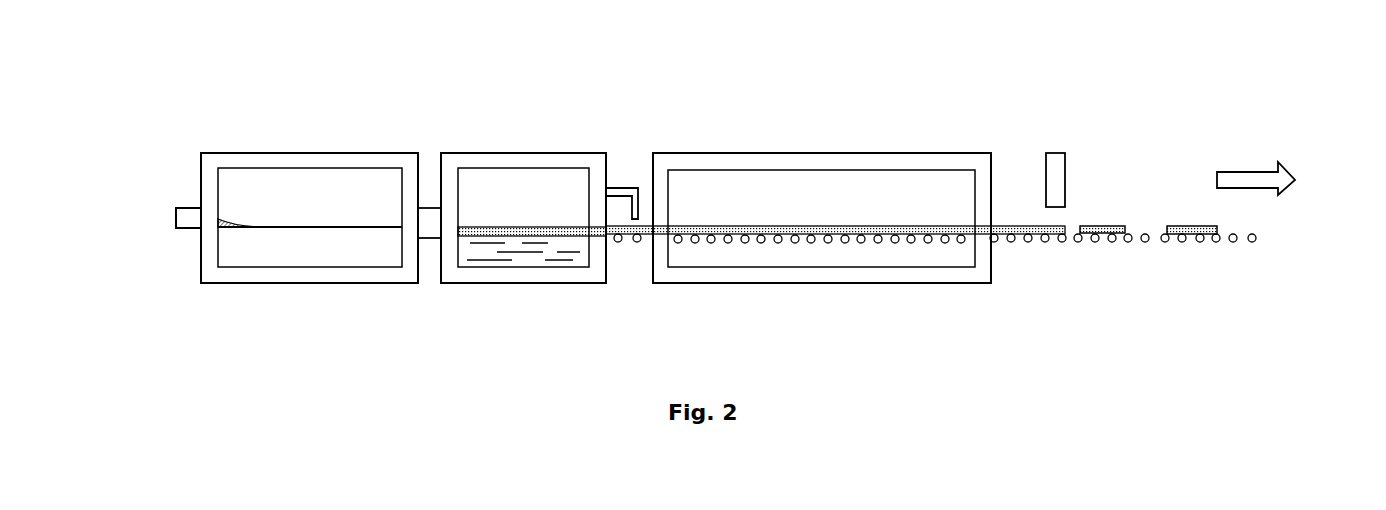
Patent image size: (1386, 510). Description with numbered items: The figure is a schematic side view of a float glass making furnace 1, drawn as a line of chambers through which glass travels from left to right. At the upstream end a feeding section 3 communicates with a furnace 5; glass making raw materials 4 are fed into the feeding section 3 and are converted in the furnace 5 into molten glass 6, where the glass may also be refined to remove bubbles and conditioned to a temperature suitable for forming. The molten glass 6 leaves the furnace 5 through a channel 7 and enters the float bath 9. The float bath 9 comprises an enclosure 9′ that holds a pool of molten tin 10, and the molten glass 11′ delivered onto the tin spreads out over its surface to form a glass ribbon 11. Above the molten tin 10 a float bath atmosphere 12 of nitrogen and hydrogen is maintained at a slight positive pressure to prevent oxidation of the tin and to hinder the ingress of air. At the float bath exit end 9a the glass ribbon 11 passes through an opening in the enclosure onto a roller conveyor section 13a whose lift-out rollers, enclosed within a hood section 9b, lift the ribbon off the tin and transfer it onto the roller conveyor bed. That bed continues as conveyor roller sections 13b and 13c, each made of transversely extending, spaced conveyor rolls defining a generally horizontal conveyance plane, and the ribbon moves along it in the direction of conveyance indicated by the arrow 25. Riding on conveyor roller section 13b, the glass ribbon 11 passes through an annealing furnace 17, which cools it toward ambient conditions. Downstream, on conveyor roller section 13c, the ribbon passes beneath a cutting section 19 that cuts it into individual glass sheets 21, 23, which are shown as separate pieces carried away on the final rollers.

The float glass making furnace 1 is at (766, 98).
The feeding section 3 is at (176, 213).
The glass making raw materials 4 is at (237, 207).
The furnace 5 is at (334, 160).
The molten glass 6 is at (378, 248).
The channel 7 is at (432, 226).
The float bath 9 is at (473, 123).
The enclosure 9′ is at (522, 158).
The float bath exit end 9a is at (629, 140).
The hood section 9b is at (627, 188).
The molten tin 10 is at (480, 252).
The glass ribbon 11 is at (788, 228).
The molten glass 11′ is at (548, 226).
The float bath atmosphere 12 is at (565, 192).
The roller conveyor section 13a is at (627, 252).
The conveyor roller section 13b is at (803, 247).
The conveyor roller section 13c is at (1113, 263).
The annealing furnace 17 is at (858, 162).
The cutting section 19 is at (1057, 165).
The glass sheet 21 is at (1107, 227).
The glass sheet 23 is at (1195, 227).
The direction of conveyance 25 is at (1257, 177).